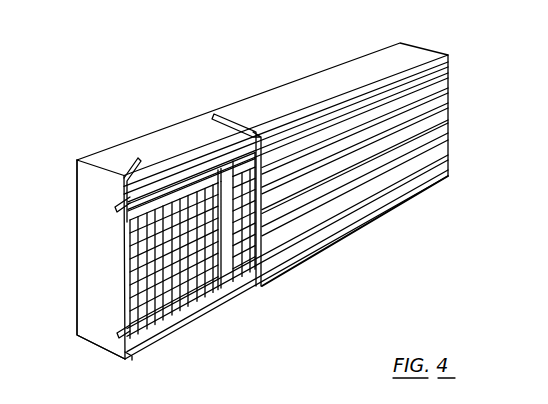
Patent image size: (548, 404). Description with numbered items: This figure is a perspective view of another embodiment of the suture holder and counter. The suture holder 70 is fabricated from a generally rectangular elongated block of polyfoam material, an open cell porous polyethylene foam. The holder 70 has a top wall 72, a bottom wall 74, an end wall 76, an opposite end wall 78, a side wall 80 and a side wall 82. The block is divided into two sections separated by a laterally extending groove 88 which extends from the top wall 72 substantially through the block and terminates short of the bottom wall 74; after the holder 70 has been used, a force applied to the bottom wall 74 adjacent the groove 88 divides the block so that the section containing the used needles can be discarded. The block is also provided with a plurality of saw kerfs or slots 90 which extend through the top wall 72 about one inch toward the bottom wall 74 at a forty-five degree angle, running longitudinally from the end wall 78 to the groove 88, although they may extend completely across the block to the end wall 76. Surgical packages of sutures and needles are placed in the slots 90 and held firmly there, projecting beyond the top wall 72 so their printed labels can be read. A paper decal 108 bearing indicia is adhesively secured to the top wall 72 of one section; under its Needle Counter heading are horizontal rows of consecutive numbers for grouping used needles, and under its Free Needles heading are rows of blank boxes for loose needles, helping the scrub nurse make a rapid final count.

The suture holder 70 is at (347, 238).
The top wall 72 is at (137, 327).
The bottom wall 74 is at (133, 140).
The end wall 76 is at (88, 232).
The end wall 78 is at (449, 107).
The side wall 80 is at (350, 68).
The side wall 82 is at (403, 200).
The groove 88 is at (258, 287).
The slots 90 is at (449, 145).
The paper decal 108 is at (178, 278).